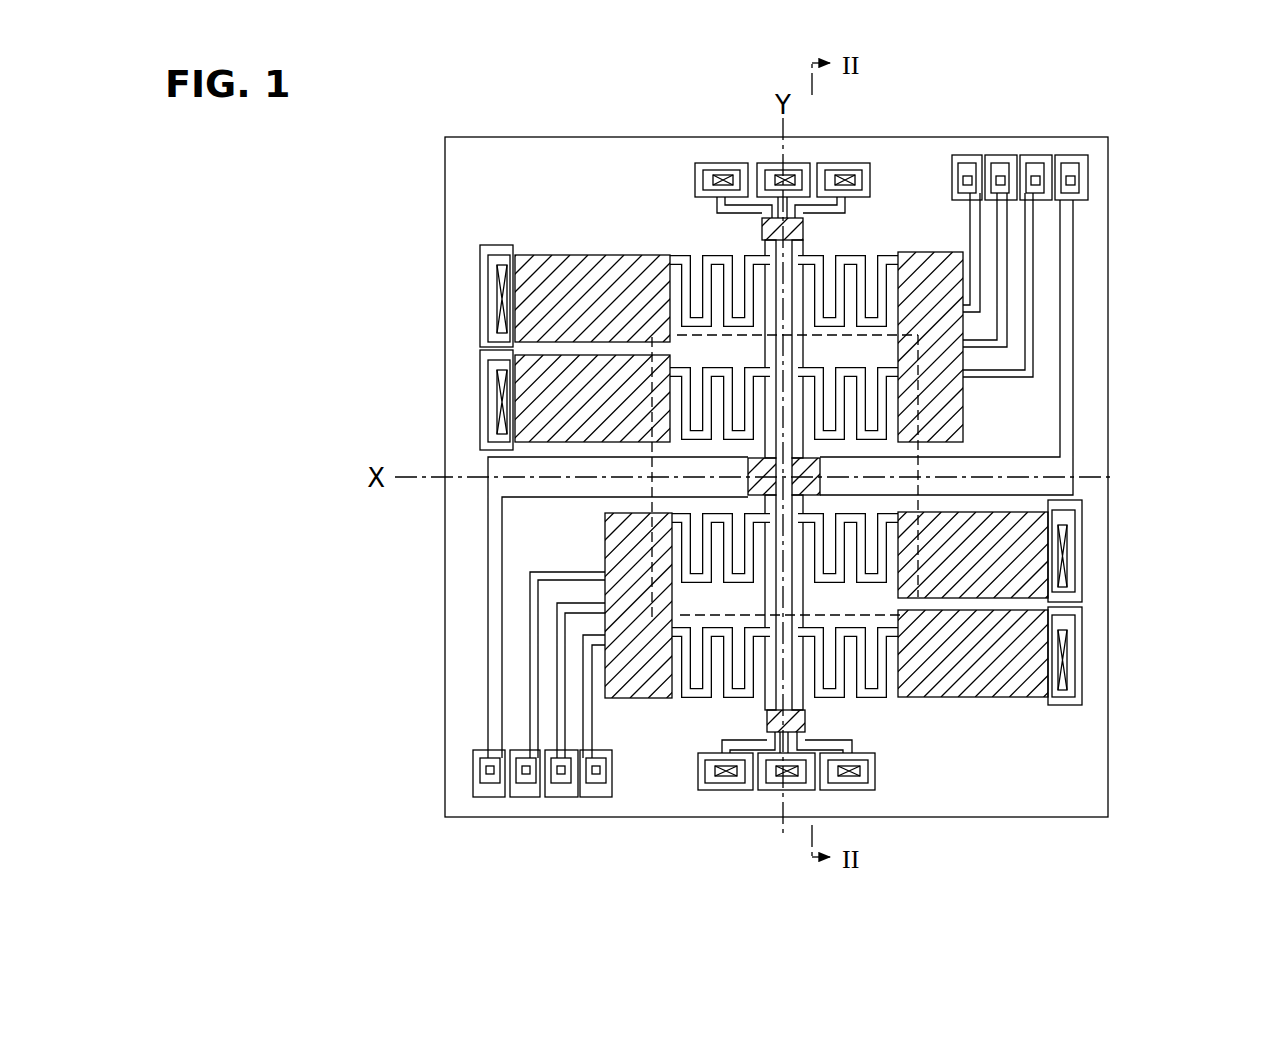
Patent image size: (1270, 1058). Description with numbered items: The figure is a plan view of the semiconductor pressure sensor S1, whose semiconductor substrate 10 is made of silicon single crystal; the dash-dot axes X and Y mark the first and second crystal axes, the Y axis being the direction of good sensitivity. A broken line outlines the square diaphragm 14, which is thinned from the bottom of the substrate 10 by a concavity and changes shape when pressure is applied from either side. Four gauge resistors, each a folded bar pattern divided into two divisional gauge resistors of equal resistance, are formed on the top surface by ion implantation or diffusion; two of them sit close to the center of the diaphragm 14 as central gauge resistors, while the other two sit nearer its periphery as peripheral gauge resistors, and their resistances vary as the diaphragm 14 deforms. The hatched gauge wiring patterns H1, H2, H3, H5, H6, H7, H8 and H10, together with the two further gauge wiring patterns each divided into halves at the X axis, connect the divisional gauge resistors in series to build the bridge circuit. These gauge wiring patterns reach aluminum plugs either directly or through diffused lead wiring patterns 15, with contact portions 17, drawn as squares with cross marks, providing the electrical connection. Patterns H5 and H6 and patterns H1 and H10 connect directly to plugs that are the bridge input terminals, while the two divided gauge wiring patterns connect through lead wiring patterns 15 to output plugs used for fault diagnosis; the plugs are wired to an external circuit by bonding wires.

The semiconductor substrate 10 is at (1080, 135).
The diaphragm 14 is at (735, 665).
The lead wiring pattern 15 is at (706, 255).
The contact portion 17 is at (790, 178).
The gauge wiring pattern H1 is at (583, 270).
The gauge wiring pattern H2 is at (815, 210).
The gauge wiring pattern H3 is at (945, 397).
The gauge wiring pattern H5 is at (983, 583).
The gauge wiring pattern H6 is at (985, 675).
The gauge wiring pattern H7 is at (845, 742).
The gauge wiring pattern H8 is at (620, 625).
The gauge wiring pattern H10 is at (552, 365).
The sensor S1 is at (1142, 131).